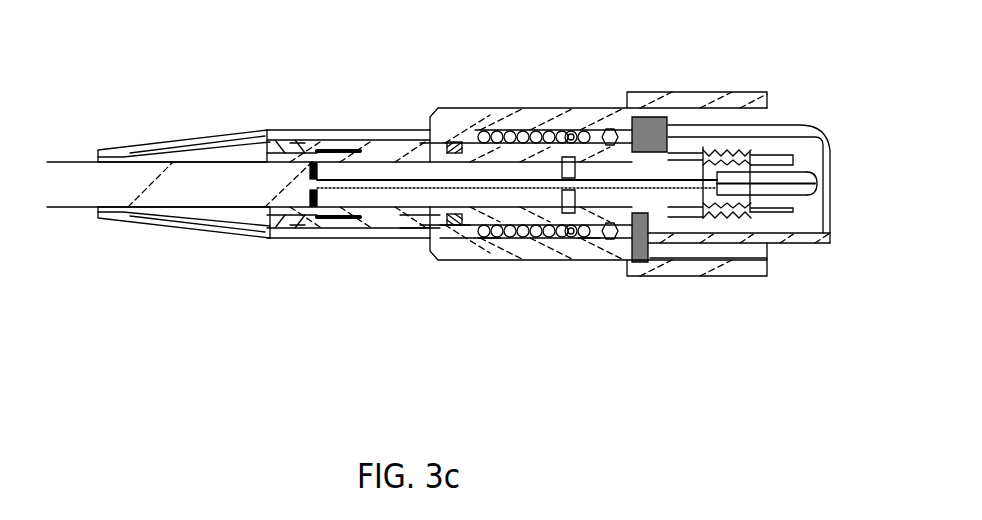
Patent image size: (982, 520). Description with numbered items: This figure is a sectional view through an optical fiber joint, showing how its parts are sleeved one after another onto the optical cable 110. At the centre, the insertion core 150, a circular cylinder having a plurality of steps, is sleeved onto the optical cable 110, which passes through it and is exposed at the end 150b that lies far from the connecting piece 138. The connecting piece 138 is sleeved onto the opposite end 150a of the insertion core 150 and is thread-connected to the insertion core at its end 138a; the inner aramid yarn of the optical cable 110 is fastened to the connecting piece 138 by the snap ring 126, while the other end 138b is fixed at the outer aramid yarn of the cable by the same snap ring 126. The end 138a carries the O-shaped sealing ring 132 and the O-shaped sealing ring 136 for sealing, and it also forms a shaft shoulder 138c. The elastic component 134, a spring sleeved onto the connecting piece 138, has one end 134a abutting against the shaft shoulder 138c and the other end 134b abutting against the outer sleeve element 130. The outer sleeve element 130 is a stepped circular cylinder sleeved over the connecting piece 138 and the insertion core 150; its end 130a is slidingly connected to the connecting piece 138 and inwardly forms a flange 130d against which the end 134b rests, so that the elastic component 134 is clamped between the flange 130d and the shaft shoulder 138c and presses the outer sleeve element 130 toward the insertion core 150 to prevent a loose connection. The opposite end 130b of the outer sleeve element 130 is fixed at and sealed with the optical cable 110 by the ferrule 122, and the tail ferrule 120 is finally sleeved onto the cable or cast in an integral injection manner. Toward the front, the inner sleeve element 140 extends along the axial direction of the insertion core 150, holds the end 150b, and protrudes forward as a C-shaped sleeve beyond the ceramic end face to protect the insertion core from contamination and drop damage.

The optical cable 110 is at (90, 172).
The tail ferrule 120 is at (137, 222).
The ferrule 122 is at (222, 158).
The snap ring 126 is at (418, 222).
The outer sleeve element 130 is at (675, 100).
The end of the outer sleeve element 130a is at (436, 215).
The end of the outer sleeve element 130b is at (719, 276).
The flange 130d is at (455, 228).
The O-shaped sealing ring 132 is at (457, 142).
The elastic component 134 is at (548, 237).
The end of the elastic component 134a is at (587, 235).
The end of the elastic component 134b is at (480, 237).
The O-shaped sealing ring 136 is at (610, 129).
The connecting piece 138 is at (438, 212).
The end of the connecting piece 138a is at (571, 130).
The end of the connecting piece 138b is at (383, 160).
The shaft shoulder 138c is at (598, 237).
The inner sleeve element 140 is at (787, 125).
The insertion core 150 is at (782, 187).
The end of the insertion core 150a is at (493, 175).
The end of the insertion core 150b is at (802, 170).